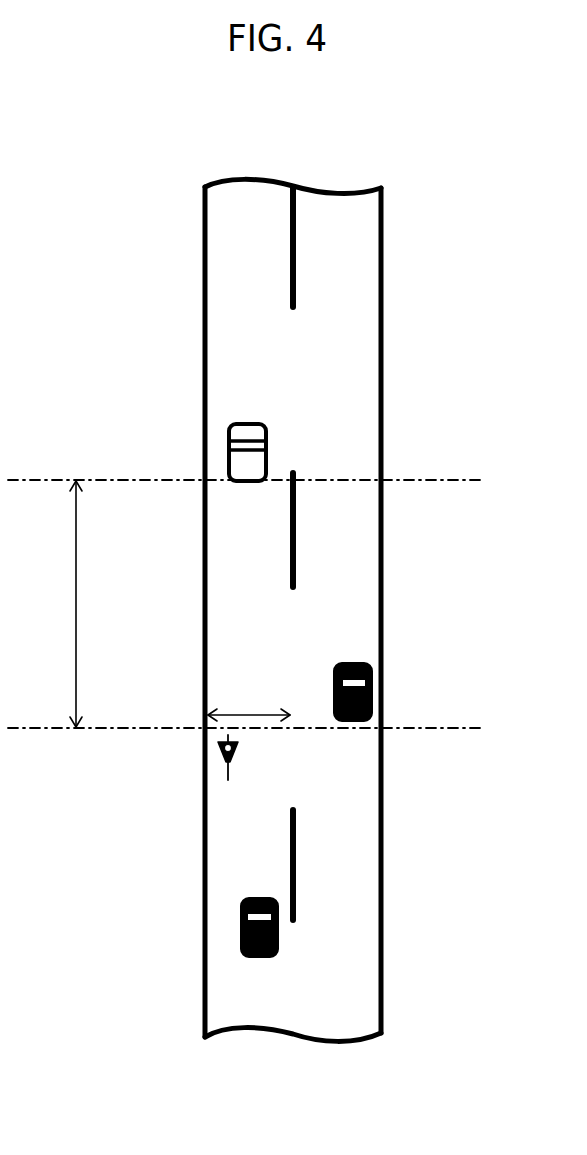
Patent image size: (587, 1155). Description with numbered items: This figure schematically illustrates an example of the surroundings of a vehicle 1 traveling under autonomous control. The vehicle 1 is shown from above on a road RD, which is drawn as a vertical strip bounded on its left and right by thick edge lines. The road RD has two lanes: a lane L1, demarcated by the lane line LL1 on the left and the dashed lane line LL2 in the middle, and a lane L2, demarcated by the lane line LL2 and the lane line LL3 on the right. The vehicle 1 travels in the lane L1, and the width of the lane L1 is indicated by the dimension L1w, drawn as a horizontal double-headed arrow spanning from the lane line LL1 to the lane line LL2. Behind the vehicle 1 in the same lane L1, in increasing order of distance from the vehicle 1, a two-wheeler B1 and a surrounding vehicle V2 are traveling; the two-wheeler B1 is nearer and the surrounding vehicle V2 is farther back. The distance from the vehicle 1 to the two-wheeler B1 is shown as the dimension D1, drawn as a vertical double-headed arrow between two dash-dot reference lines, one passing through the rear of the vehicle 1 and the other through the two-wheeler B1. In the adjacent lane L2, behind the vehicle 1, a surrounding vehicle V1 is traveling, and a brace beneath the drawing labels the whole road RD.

The vehicle 1 is at (229, 452).
The surrounding vehicle V1 is at (374, 687).
The surrounding vehicle V2 is at (242, 916).
The two-wheeler B1 is at (225, 760).
The lane L1 is at (235, 192).
The lane L2 is at (343, 203).
The lane line LL1 is at (205, 212).
The lane line LL2 is at (293, 187).
The lane line LL3 is at (383, 213).
The road RD is at (295, 618).
The distance D1 is at (57, 604).
The width of the lane L1w is at (249, 702).